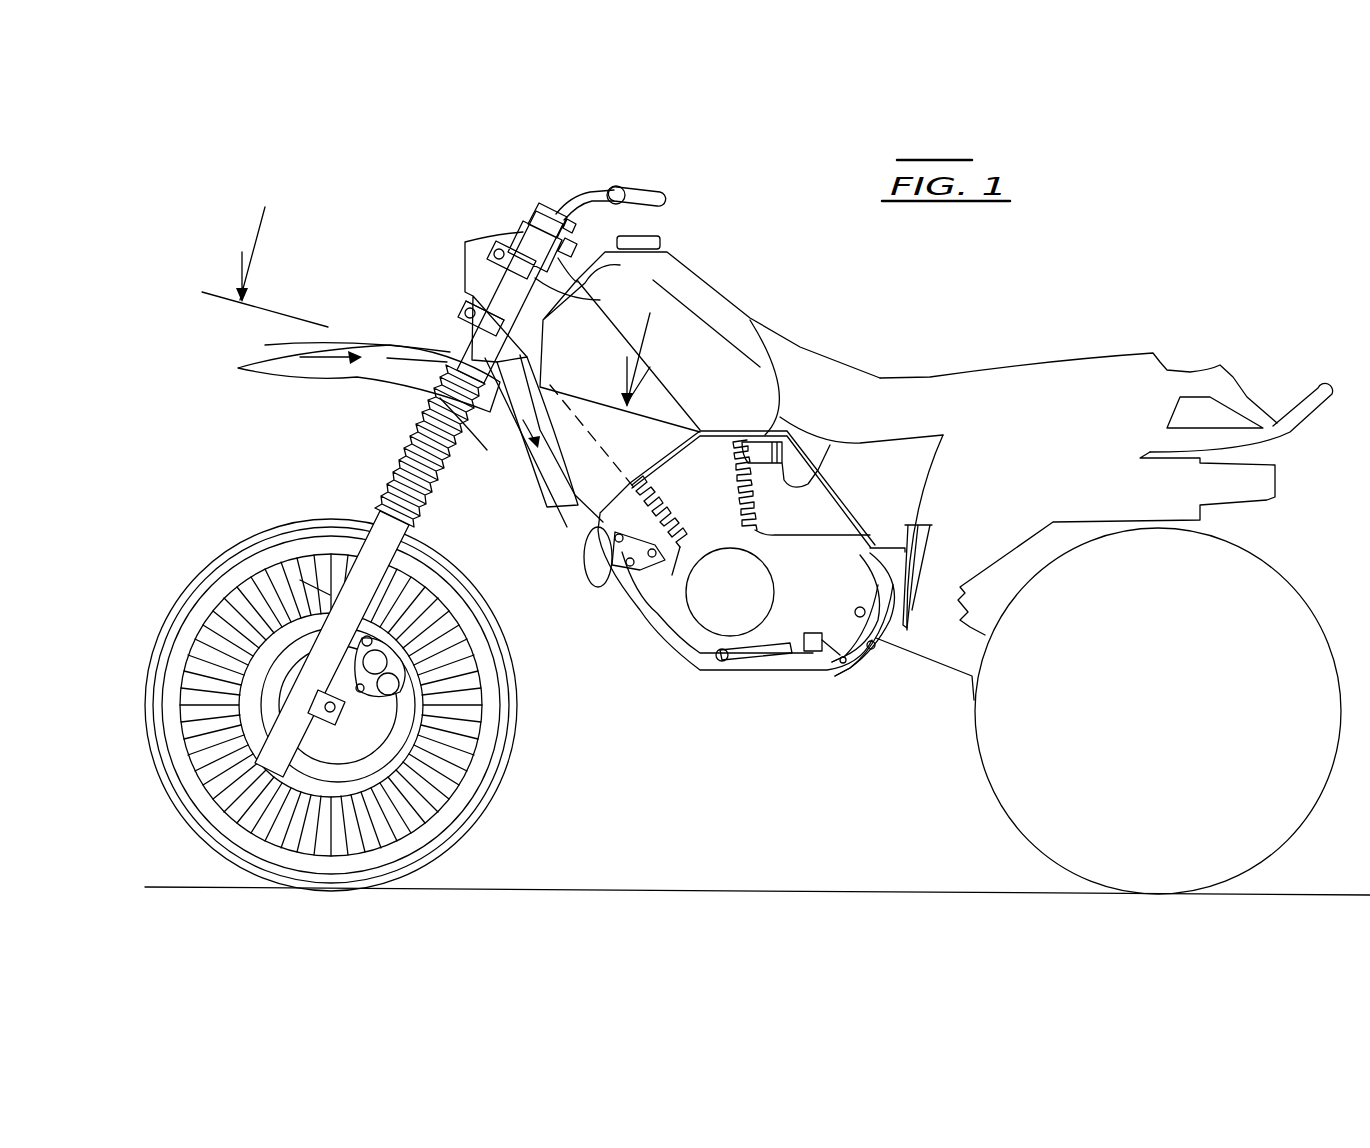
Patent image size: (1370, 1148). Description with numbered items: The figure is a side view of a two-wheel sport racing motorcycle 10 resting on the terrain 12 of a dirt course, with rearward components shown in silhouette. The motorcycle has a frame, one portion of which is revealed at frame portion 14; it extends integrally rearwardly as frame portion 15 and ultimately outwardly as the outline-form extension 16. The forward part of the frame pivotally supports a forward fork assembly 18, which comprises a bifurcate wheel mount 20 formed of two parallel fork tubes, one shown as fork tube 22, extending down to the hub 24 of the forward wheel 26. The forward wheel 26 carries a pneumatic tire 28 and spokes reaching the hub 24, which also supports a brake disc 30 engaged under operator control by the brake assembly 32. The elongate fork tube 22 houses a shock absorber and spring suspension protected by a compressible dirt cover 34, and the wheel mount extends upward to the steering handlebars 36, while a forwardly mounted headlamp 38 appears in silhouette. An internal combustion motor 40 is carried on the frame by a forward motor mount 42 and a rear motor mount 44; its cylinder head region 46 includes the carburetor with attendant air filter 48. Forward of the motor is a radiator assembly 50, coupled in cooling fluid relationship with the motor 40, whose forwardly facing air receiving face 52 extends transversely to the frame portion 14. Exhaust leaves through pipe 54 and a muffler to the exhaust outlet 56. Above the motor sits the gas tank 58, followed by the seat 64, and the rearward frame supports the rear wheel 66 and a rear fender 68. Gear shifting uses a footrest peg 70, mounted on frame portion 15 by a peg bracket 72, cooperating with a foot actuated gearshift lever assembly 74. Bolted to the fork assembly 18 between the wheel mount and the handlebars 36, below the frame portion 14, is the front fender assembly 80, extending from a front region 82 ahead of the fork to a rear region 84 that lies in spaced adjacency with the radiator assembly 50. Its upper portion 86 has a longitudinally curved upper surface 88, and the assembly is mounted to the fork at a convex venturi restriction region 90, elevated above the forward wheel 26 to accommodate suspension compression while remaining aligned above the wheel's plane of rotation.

The sport motorcycle 10 is at (797, 150).
The terrain 12 is at (660, 891).
The frame portion 14 is at (660, 640).
The frame portion 15 is at (881, 624).
The frame outward extension 16 is at (1318, 385).
The forward fork assembly 18 is at (436, 290).
The bifurcate wheel mount 20 is at (398, 452).
The fork tube 22 is at (367, 585).
The hub 24 is at (340, 710).
The forward wheel 26 is at (496, 821).
The pneumatic tire 28 is at (216, 813).
The brake disc 30 is at (293, 638).
The brake assembly 32 is at (400, 665).
The compressible dirt cover 34 is at (410, 474).
The steering handlebars 36 is at (587, 190).
The headlamp 38 is at (465, 243).
The internal combustion motor 40 is at (724, 603).
The forward motor mount 42 is at (620, 550).
The rear motor mount 44 is at (868, 645).
The cylinder head region 46 is at (755, 503).
The carburetor with air filter 48 is at (775, 443).
The radiator assembly 50 is at (598, 505).
The air receiving face 52 is at (577, 498).
The exhaust pipe 54 is at (598, 578).
The exhaust outlet 56 is at (1262, 490).
The gas tank 58 is at (683, 272).
The motorcycle seat 64 is at (935, 378).
The rear wheel 66 is at (1290, 592).
The rear fender 68 is at (925, 568).
The footrest peg 70 is at (815, 650).
The peg bracket 72 is at (830, 658).
The gearshift lever assembly 74 is at (745, 652).
The front fender assembly 80 is at (336, 303).
The front region 82 is at (298, 392).
The rear region 84 is at (518, 461).
The upper portion 86 is at (447, 343).
The upper surface 88 is at (352, 343).
The venturi restriction region 90 is at (440, 400).